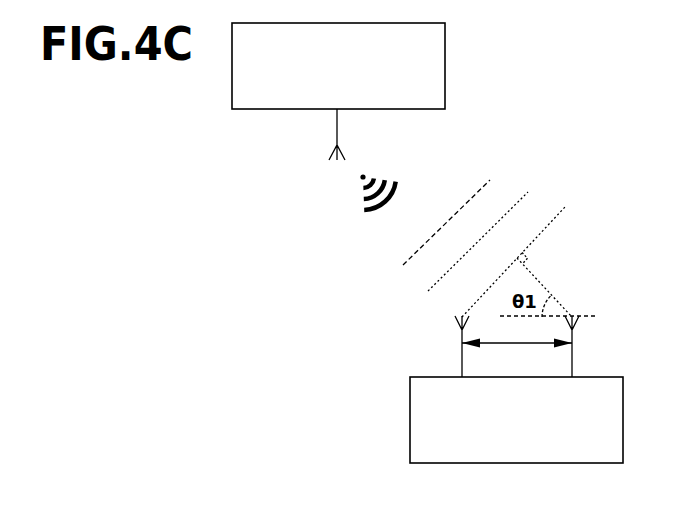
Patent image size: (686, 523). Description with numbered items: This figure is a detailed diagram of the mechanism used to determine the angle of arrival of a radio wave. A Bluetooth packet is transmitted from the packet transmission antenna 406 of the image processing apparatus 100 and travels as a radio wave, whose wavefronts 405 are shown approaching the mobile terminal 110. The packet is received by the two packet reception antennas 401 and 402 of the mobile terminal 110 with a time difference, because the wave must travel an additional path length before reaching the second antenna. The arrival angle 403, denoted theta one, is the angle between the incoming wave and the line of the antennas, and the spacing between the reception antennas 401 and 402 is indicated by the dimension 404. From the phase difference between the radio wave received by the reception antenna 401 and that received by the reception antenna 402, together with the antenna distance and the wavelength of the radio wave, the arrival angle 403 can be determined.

The image processing apparatus 100 is at (445, 65).
The mobile terminal 110 is at (410, 422).
The packet reception antenna 401 is at (458, 331).
The packet reception antenna 402 is at (577, 331).
The arrival angle (AoA) 403 is at (528, 282).
The distance d1 between antennas 404 is at (532, 356).
The wavefront of radio wave 405 is at (538, 206).
The Bluetooth packet transmission antenna 406 is at (340, 149).